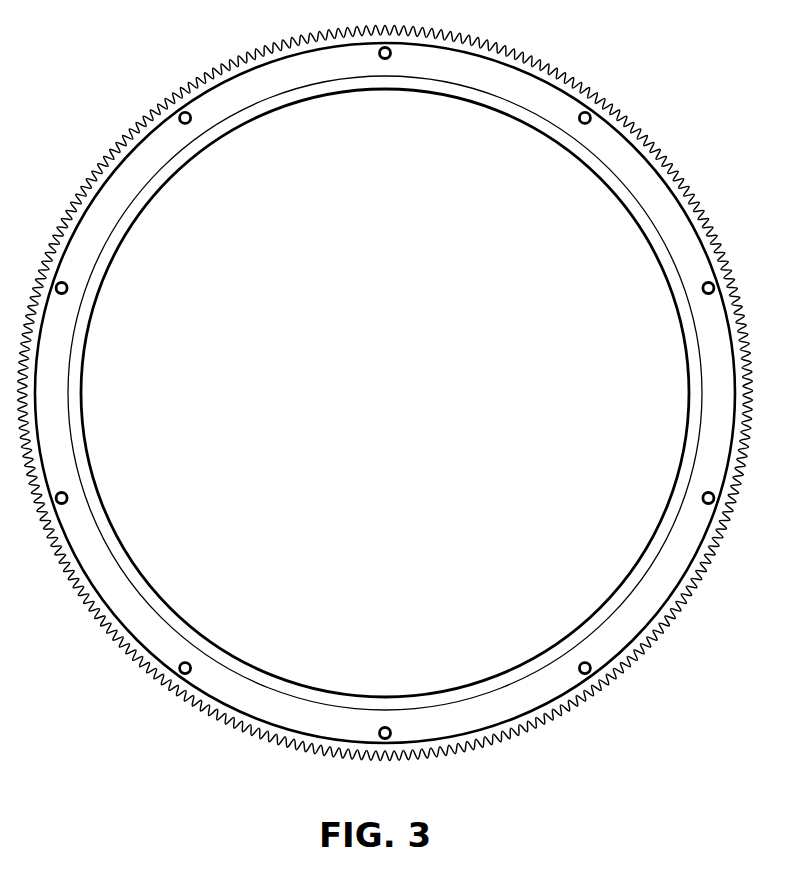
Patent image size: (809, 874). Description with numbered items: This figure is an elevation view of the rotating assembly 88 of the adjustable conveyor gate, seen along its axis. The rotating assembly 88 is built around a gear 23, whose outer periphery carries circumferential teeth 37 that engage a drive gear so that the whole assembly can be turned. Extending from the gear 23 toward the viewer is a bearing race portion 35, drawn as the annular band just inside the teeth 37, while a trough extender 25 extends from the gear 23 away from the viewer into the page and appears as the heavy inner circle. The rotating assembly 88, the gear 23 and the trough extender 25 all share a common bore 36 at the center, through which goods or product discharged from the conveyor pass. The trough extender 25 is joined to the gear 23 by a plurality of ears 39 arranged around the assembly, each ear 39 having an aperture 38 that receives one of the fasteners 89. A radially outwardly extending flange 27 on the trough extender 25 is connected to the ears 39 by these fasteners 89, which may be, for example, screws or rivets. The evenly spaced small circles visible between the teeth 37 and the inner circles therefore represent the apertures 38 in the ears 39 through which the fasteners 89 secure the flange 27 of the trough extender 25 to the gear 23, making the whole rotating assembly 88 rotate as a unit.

The rotating assembly 88 is at (219, 756).
The gear 23 is at (706, 199).
The circumferential teeth 37 is at (678, 173).
The bearing race portion 35 is at (513, 72).
The bore 36 is at (365, 410).
The trough extender 25 is at (401, 695).
The flange 27 is at (612, 643).
The aperture 38 is at (184, 128).
The ears 39 is at (193, 125).
The fasteners 89 is at (193, 118).